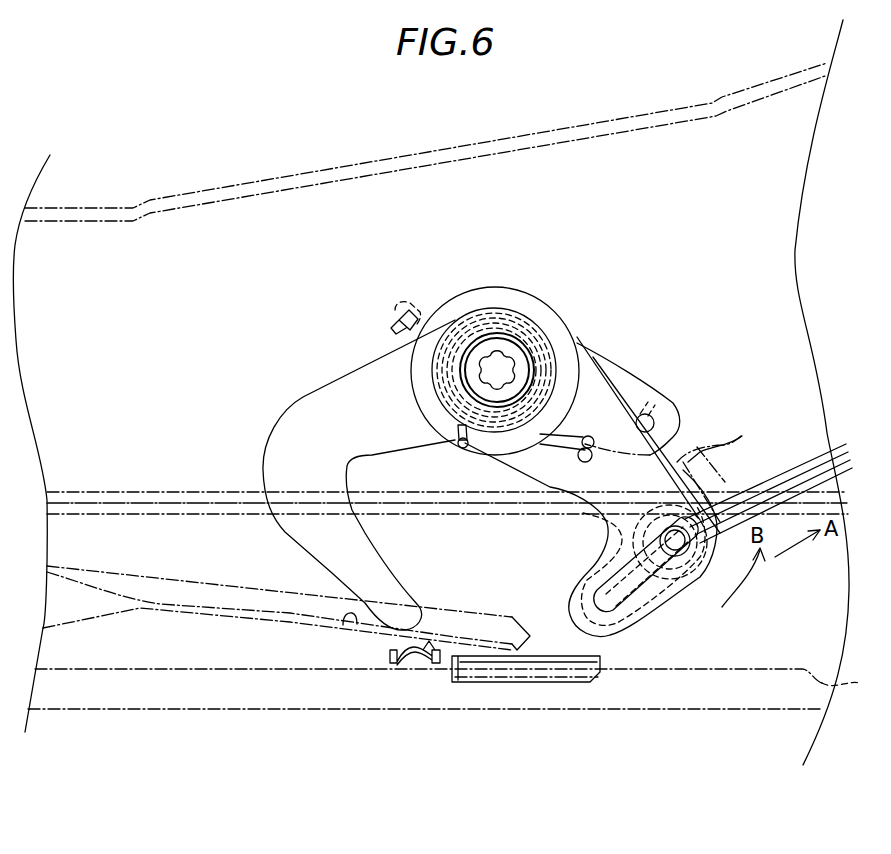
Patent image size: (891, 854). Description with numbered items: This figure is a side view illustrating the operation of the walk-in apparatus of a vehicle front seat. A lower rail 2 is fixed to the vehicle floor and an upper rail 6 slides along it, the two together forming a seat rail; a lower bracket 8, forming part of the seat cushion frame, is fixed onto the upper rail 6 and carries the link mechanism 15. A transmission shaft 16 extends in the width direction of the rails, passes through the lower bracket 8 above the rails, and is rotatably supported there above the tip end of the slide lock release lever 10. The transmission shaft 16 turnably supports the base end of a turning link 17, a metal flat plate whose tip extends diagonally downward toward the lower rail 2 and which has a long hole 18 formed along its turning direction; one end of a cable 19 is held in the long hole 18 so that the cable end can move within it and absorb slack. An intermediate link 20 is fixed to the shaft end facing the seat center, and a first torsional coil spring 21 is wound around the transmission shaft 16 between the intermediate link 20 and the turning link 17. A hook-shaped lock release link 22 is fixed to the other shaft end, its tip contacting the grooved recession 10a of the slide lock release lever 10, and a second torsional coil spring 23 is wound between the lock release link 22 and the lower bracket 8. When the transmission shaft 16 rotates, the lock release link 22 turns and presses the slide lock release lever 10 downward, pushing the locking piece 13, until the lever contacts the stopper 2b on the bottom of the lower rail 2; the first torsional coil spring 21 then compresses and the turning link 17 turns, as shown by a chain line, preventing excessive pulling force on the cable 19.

The lower rail 2 is at (715, 710).
The stopper 2b is at (430, 666).
The upper rail 6 is at (851, 684).
The lower bracket 8 is at (562, 128).
The slide lock release lever 10 is at (305, 633).
The grooved recession 10a is at (355, 630).
The locking piece 13 is at (517, 690).
The link mechanism 15 is at (655, 360).
The transmission shaft 16 is at (497, 356).
The turning link 17 is at (724, 471).
The long hole 18 is at (643, 592).
The cable 19 is at (783, 465).
The intermediate link 20 is at (676, 403).
The first torsional coil spring 21 is at (608, 368).
The lock release link 22 is at (303, 396).
The second torsional coil spring 23 is at (412, 322).